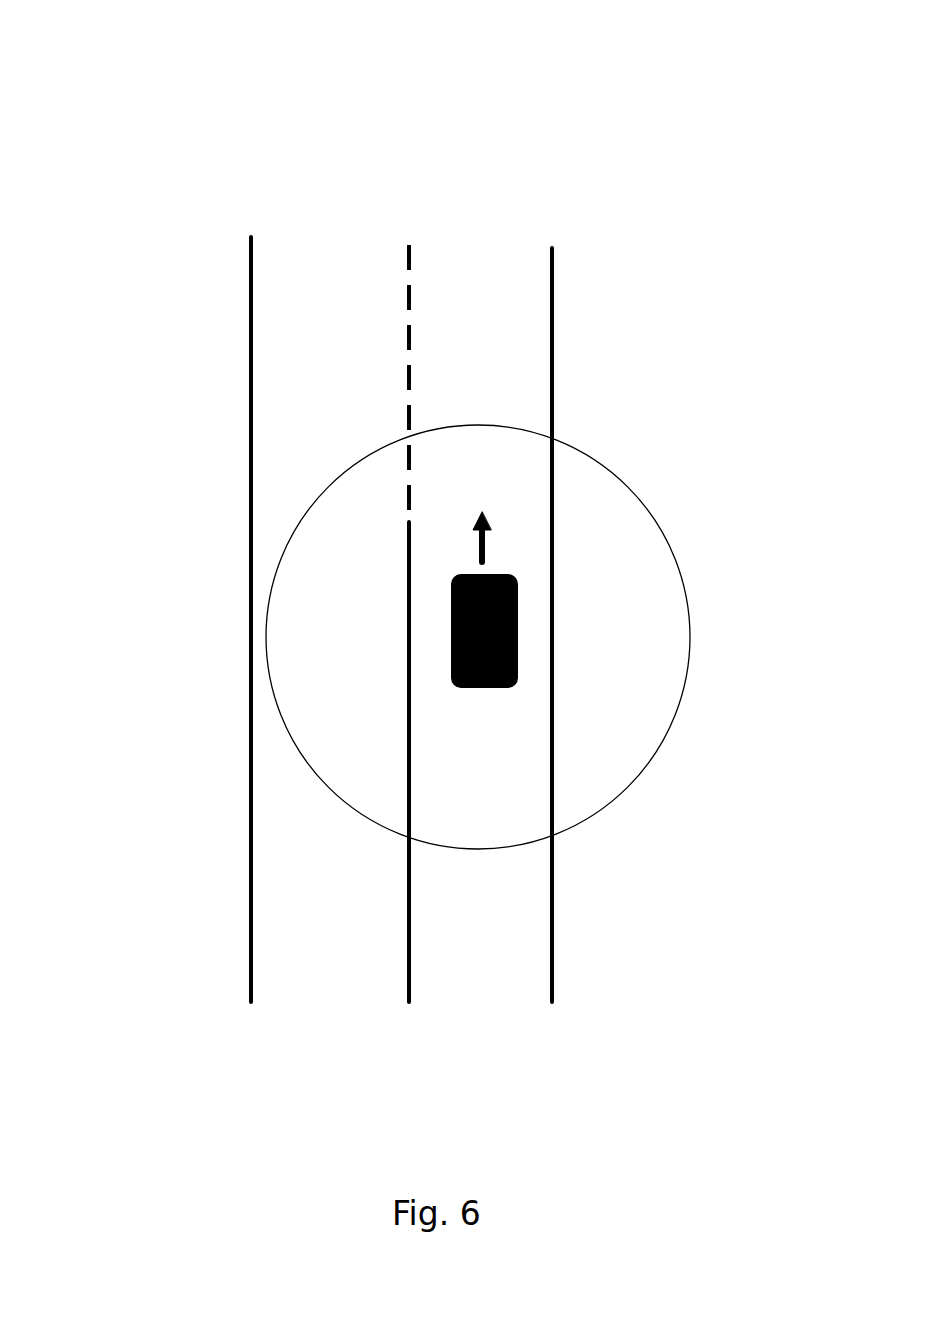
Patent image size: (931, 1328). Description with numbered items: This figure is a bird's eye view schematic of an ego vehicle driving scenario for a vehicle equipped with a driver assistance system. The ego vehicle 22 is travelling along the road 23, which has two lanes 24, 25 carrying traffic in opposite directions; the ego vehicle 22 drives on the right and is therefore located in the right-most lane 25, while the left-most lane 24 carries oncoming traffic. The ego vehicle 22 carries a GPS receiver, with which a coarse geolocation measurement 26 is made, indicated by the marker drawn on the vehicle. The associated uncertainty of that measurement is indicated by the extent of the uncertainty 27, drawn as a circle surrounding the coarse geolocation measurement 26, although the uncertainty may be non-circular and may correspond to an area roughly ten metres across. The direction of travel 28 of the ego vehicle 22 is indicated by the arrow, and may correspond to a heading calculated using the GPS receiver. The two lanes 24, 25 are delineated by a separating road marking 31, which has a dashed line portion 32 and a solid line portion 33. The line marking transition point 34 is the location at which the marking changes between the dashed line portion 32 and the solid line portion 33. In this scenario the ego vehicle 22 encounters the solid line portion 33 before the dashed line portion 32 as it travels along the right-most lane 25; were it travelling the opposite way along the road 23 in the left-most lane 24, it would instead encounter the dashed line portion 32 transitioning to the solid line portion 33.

The ego vehicle 22 is at (482, 657).
The road 23 is at (338, 147).
The left-most lane 24 is at (323, 987).
The right-most lane 25 is at (488, 993).
The coarse geolocation measurement 26 is at (480, 633).
The extent of the uncertainty 27 is at (320, 488).
The direction of travel 28 is at (480, 542).
The separating road marking 31 is at (415, 233).
The dashed line portion 32 is at (393, 338).
The solid line portion 33 is at (397, 743).
The line marking transition point 34 is at (403, 522).